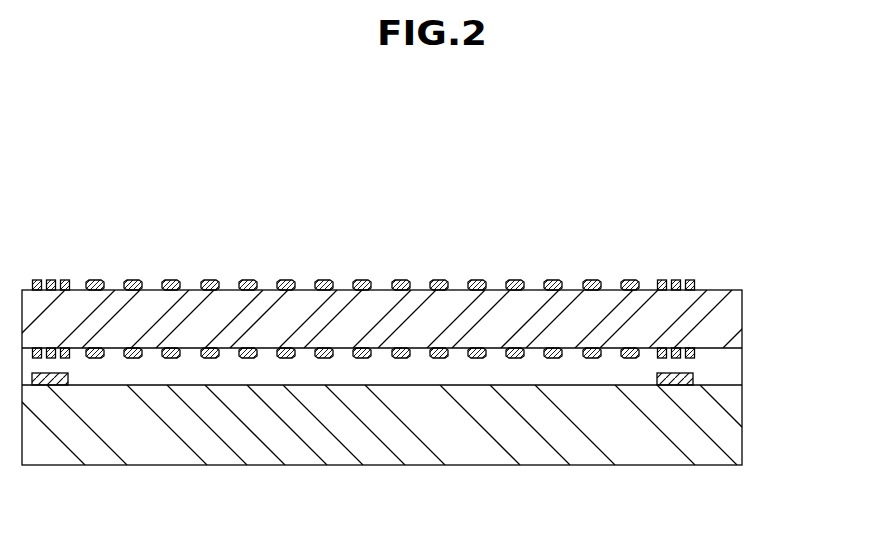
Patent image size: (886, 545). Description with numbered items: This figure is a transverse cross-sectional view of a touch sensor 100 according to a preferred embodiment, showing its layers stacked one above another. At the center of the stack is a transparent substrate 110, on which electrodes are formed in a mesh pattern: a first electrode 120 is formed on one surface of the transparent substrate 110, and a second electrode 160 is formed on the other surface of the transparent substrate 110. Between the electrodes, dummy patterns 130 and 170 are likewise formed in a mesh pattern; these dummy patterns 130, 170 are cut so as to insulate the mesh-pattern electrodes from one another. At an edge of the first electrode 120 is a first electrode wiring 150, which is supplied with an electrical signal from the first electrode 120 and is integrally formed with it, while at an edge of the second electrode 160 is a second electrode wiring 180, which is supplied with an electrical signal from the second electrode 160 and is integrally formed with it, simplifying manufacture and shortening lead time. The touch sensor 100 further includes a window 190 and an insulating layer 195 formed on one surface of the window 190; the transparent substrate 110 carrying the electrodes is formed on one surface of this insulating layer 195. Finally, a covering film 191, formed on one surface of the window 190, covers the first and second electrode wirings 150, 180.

The touch sensor 100 is at (527, 176).
The transparent substrate 110 is at (725, 323).
The first electrode 120 is at (141, 280).
The dummy pattern 130 is at (216, 280).
The first electrode wiring 150 is at (691, 280).
The second electrode 160 is at (92, 360).
The dummy pattern 170 is at (168, 360).
The second electrode wiring 180 is at (693, 357).
The window 190 is at (723, 430).
The covering film 191 is at (693, 373).
The insulating layer 195 is at (577, 374).